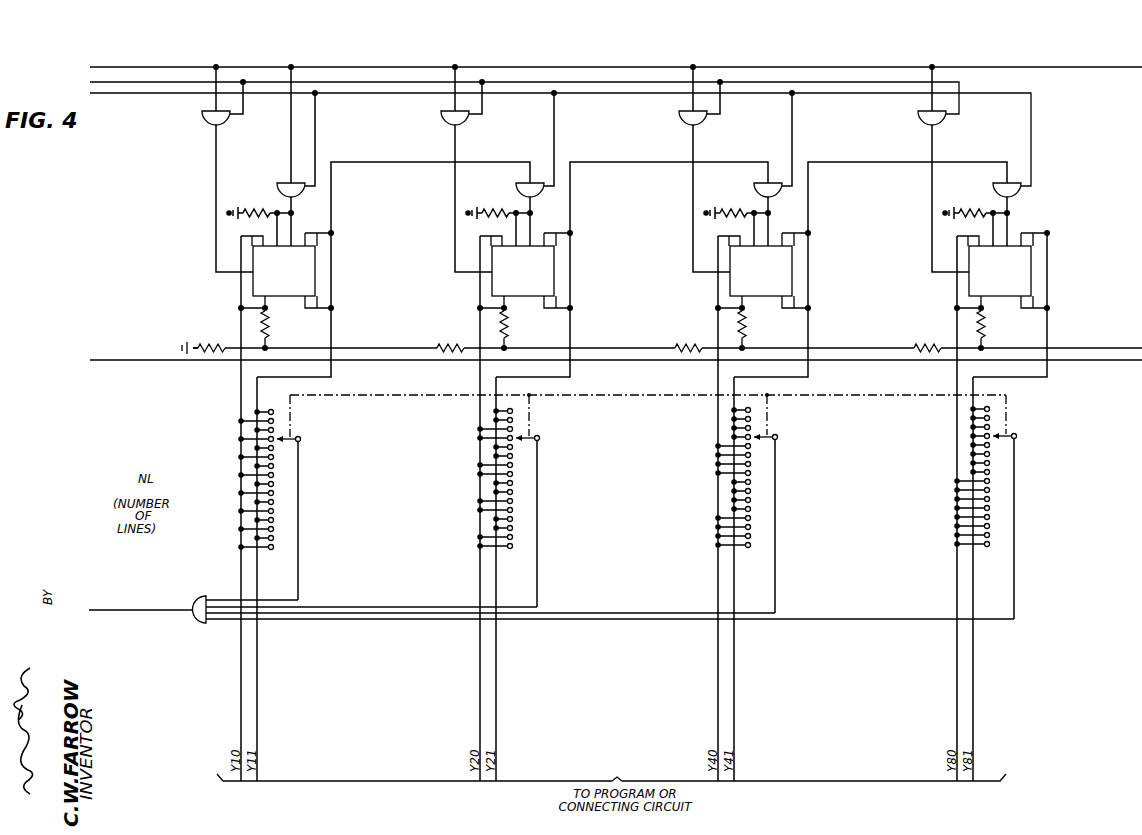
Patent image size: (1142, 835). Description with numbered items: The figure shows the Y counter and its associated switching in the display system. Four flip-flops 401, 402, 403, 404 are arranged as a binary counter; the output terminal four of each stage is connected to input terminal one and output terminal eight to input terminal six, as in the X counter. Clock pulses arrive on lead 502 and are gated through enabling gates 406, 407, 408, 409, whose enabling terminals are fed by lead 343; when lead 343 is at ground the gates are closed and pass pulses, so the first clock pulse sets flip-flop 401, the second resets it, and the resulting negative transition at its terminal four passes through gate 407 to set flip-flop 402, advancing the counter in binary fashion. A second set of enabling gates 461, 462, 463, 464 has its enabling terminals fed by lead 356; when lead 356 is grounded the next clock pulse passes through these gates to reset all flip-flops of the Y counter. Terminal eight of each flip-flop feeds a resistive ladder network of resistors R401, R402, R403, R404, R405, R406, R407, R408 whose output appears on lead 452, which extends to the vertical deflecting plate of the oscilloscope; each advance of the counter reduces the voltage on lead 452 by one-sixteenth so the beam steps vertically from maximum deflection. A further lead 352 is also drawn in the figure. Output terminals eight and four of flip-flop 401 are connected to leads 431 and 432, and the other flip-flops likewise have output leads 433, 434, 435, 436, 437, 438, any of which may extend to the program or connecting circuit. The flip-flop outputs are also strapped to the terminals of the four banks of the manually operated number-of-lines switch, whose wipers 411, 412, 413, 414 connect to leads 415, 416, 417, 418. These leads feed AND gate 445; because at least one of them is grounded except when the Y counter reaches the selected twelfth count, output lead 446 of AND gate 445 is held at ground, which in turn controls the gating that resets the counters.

The clock pulse lead 502 is at (127, 66).
The lead to enabling gates 461-464 356 is at (357, 80).
The lead to enabling gates 406-409 343 is at (150, 93).
The enabling gate 461 is at (206, 120).
The enabling gate 462 is at (445, 120).
The enabling gate 463 is at (683, 120).
The enabling gate 464 is at (922, 120).
The enabling gate 406 is at (281, 182).
The enabling gate 407 is at (520, 182).
The enabling gate 408 is at (758, 182).
The enabling gate 409 is at (997, 182).
The flip-flop 401 is at (290, 298).
The flip-flop 402 is at (529, 298).
The flip-flop 403 is at (767, 298).
The flip-flop 404 is at (1006, 298).
The lead 431 is at (241, 319).
The lead 432 is at (332, 322).
The output lead 433 is at (480, 319).
The output lead 434 is at (571, 322).
The output lead 435 is at (718, 319).
The output lead 436 is at (809, 322).
The output lead 437 is at (957, 319).
The output lead 438 is at (1048, 320).
The resistor R401 is at (205, 344).
The resistor R402 is at (270, 329).
The resistor R403 is at (444, 344).
The resistor R404 is at (509, 329).
The resistor R405 is at (683, 344).
The resistor R406 is at (747, 329).
The resistor R407 is at (922, 344).
The resistor R408 is at (986, 329).
The lead 452 is at (1108, 347).
The conductor 352 is at (128, 361).
The wiper 411 is at (299, 436).
The wiper 412 is at (538, 435).
The wiper 413 is at (776, 434).
The wiper 414 is at (1015, 433).
The lead 415 is at (300, 537).
The lead 416 is at (336, 601).
The lead 417 is at (574, 608).
The lead 418 is at (846, 613).
The AND gate 445 is at (196, 597).
The output lead 446 is at (128, 611).